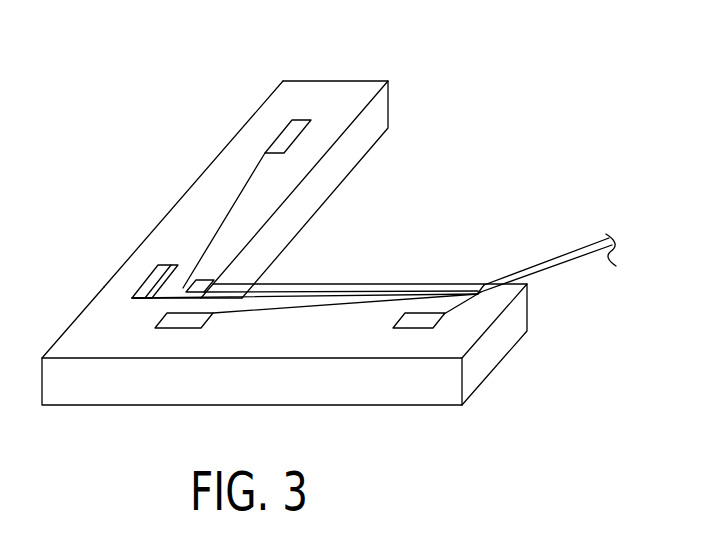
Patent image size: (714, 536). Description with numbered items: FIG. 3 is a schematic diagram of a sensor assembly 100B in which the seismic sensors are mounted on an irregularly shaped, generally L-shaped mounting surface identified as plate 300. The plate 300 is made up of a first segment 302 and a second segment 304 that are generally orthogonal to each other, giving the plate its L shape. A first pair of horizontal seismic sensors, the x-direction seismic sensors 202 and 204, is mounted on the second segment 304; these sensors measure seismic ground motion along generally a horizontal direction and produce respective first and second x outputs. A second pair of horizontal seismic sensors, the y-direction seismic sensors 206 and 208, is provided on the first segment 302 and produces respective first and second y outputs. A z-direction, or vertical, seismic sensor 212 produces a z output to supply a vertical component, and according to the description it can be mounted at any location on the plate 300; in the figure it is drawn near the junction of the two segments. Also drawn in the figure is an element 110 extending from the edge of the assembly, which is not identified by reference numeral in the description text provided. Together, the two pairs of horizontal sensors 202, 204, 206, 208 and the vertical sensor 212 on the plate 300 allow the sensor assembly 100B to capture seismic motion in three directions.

The sensor assembly 100B is at (500, 52).
The optical fiber 110 is at (551, 265).
The x-direction seismic sensor 202 is at (178, 330).
The x-direction seismic sensor 204 is at (418, 330).
The y-direction seismic sensor 206 is at (162, 270).
The y-direction seismic sensor 208 is at (283, 132).
The z-direction seismic sensor 212 is at (220, 283).
The plate 300 is at (337, 80).
The first segment 302 is at (318, 155).
The second segment 304 is at (360, 274).